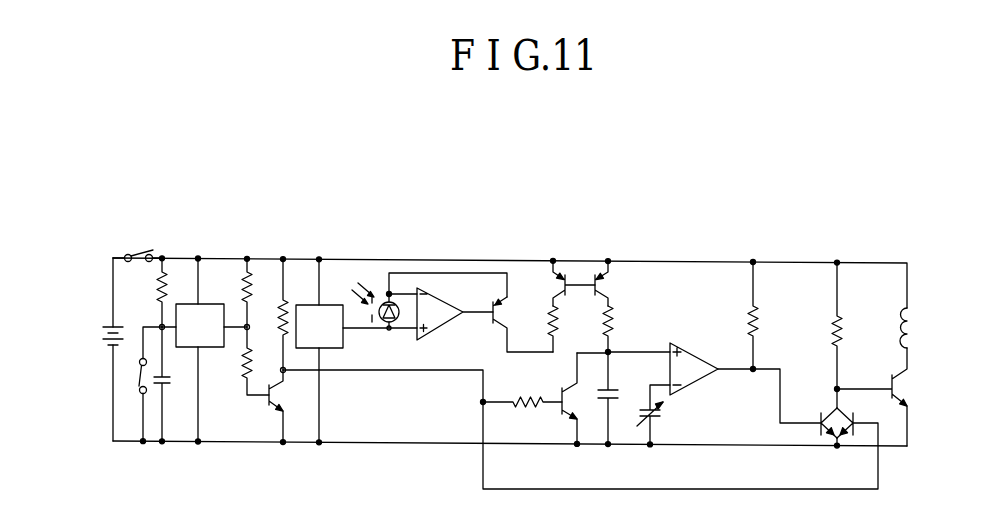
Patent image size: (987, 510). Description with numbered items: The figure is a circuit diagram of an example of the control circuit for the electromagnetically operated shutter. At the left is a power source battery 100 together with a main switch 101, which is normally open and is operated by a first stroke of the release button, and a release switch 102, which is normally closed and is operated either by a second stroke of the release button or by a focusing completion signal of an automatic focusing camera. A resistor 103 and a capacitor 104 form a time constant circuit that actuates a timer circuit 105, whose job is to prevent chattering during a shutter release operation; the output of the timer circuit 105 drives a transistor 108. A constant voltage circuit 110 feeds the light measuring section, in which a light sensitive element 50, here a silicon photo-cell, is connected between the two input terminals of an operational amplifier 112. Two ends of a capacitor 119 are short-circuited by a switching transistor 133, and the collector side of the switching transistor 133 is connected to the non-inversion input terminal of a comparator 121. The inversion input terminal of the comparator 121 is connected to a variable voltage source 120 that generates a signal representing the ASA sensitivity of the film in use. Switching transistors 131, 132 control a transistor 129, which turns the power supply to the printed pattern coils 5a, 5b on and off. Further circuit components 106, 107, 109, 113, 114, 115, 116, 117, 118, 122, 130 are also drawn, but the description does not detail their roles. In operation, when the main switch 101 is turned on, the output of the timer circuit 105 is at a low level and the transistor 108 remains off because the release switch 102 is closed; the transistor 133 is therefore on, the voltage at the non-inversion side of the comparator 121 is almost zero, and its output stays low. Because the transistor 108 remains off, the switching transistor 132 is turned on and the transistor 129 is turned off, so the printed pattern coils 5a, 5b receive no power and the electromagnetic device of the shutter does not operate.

The power source battery 100 is at (106, 334).
The main switch 101 is at (145, 251).
The release switch 102 is at (139, 383).
The resistor 103 is at (160, 290).
The capacitor 104 is at (171, 382).
The timer circuit 105 is at (200, 350).
The resistor 106 is at (246, 368).
The resistor 107 is at (246, 290).
The transistor 108 is at (272, 402).
The resistor 109 is at (284, 310).
The constant voltage circuit 110 is at (319, 350).
The light sensitive element 50 is at (383, 324).
The operational amplifier 112 is at (445, 322).
The transistor 113 is at (499, 304).
The resistor 114 is at (555, 325).
The transistor 115 is at (563, 285).
The transistor 116 is at (598, 285).
The resistor 117 is at (610, 325).
The resistor 118 is at (533, 400).
The capacitor 119 is at (624, 388).
The variable voltage source 120 is at (661, 414).
The comparator 121 is at (706, 340).
The resistor 122 is at (756, 320).
The transistor 129 is at (900, 388).
The resistor 130 is at (839, 330).
The switching transistor 131 is at (828, 413).
The switching transistor 132 is at (845, 416).
The switching transistor 133 is at (572, 412).
The printed pattern coil 5a is at (936, 328).
The printed pattern coil 5b is at (913, 330).